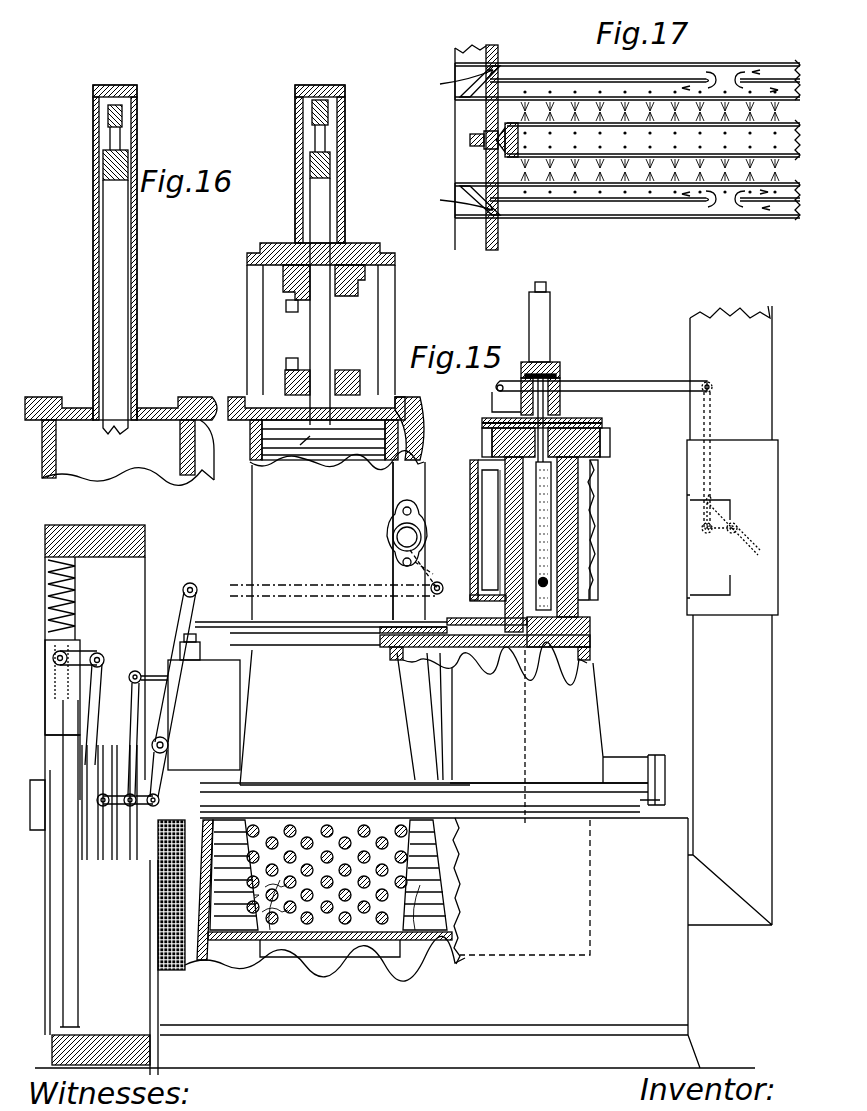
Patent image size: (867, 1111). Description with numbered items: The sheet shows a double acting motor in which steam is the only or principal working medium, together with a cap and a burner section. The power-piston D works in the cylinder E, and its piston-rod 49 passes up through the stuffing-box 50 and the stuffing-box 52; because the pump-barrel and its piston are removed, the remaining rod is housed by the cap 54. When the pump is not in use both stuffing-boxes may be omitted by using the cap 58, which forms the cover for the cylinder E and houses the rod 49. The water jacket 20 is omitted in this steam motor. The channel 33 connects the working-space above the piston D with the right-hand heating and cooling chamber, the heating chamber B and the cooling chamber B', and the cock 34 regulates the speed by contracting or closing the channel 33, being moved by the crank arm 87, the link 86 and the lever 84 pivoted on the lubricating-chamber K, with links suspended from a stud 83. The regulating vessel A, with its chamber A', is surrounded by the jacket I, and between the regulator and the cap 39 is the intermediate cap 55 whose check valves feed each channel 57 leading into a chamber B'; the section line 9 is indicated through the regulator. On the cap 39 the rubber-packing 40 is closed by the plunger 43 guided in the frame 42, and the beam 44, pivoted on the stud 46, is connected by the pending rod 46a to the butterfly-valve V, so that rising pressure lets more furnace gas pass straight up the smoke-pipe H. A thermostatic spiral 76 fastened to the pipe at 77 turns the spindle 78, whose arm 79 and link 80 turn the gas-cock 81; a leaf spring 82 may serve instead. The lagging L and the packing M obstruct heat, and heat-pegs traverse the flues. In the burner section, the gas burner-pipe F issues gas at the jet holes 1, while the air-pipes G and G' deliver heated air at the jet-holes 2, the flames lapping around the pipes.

In FIG. 16, the cap 58 is at (130, 252).
In FIG. 16, the piston-rod 49 is at (115, 269).
In FIG. 15, the piston-rod 49 is at (321, 262).
In FIG. 16, the cylinder E is at (121, 441).
In FIG. 15, the cylinder E is at (337, 535).
In FIG. 17, the air-pipe G is at (620, 71).
In FIG. 17, the air-pipe G' is at (620, 213).
In FIG. 17, the gas burner-pipe F is at (635, 140).
In FIG. 17, the jet holes 1 is at (529, 142).
In FIG. 17, the jet-holes 2 is at (550, 92).
In FIG. 15, the cap 54 is at (345, 200).
In FIG. 15, the stuffing-box 52 is at (321, 277).
In FIG. 15, the stuffing-box 50 is at (366, 385).
In FIG. 15, the channel 33 is at (420, 442).
In FIG. 15, the power-piston D is at (352, 455).
In FIG. 15, the water jacket 20 is at (246, 441).
In FIG. 15, the cock 34 is at (418, 532).
In FIG. 15, the crank arm 87 is at (447, 574).
In FIG. 15, the link 86 is at (241, 591).
In FIG. 15, the cooling chamber B' is at (444, 713).
In FIG. 15, the plunger 43 is at (546, 286).
In FIG. 15, the inverted U frame 42 is at (539, 327).
In FIG. 15, the beam 44 is at (560, 390).
In FIG. 15, the stud 46 is at (490, 404).
In FIG. 15, the cap 39 is at (602, 421).
In FIG. 15, the hat shaped rubber-packing 40 is at (602, 428).
In FIG. 15, the intermediate cap 55 is at (482, 437).
In FIG. 15, the regulating vessel A is at (543, 541).
In FIG. 15, the jacket I is at (547, 530).
In FIG. 15, the channel 57 is at (523, 580).
In FIG. 15, the regulator chamber A' is at (543, 530).
In FIG. 15, the section line 9 is at (533, 712).
In FIG. 15, the smoke-pipe H is at (732, 615).
In FIG. 15, the pending rod 46a is at (712, 418).
In FIG. 15, the butterfly-valve V is at (731, 524).
In FIG. 15, the spindle 78 is at (45, 590).
In FIG. 15, the spiral 76 is at (45, 683).
In FIG. 15, the fastening point 77 is at (45, 748).
In FIG. 15, the link 80 is at (98, 863).
In FIG. 15, the gas-cock 81 is at (104, 656).
In FIG. 15, the arm 79 is at (98, 690).
In FIG. 15, the stud 83 is at (140, 672).
In FIG. 15, the spring 82 is at (135, 722).
In FIG. 15, the lever 84 is at (183, 620).
In FIG. 15, the lubricating-chamber K is at (204, 702).
In FIG. 15, the packing M is at (694, 1028).
In FIG. 15, the lagging L is at (185, 860).
In FIG. 15, the heating chamber B is at (327, 878).